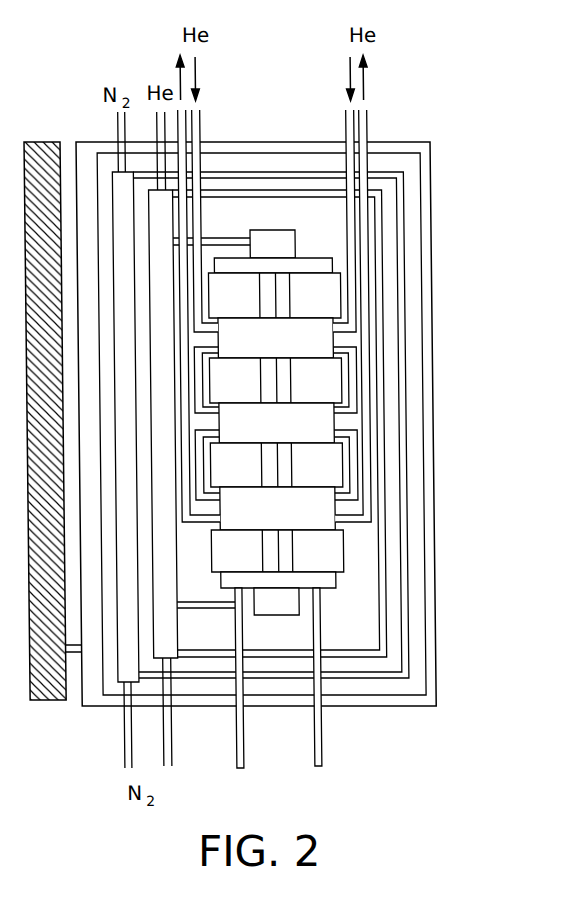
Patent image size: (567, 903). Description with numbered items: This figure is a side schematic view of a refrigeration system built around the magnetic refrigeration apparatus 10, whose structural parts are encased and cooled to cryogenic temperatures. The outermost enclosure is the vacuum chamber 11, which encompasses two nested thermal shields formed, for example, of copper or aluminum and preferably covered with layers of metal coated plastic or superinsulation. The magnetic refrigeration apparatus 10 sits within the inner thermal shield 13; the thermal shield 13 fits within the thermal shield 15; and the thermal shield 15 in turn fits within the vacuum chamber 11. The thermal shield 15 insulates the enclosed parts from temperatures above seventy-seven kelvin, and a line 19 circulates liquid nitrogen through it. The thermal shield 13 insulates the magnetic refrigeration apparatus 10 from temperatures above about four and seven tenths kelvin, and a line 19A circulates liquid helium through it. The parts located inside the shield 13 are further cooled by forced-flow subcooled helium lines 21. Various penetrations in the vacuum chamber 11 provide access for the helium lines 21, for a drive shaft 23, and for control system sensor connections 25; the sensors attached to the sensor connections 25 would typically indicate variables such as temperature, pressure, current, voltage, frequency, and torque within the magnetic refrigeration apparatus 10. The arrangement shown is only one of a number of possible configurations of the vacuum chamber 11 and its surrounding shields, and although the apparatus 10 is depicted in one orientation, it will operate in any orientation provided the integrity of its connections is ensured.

The magnetic refrigeration apparatus 10 is at (346, 545).
The vacuum chamber 11 is at (430, 392).
The thermal shield 13 is at (382, 489).
The thermal shield 15 is at (404, 433).
The line 19 is at (117, 128).
The line 19A is at (156, 128).
The forced-flow subcooled helium lines 21 is at (202, 134).
The drive shaft 23 is at (244, 730).
The control system sensor connections 25 is at (323, 723).